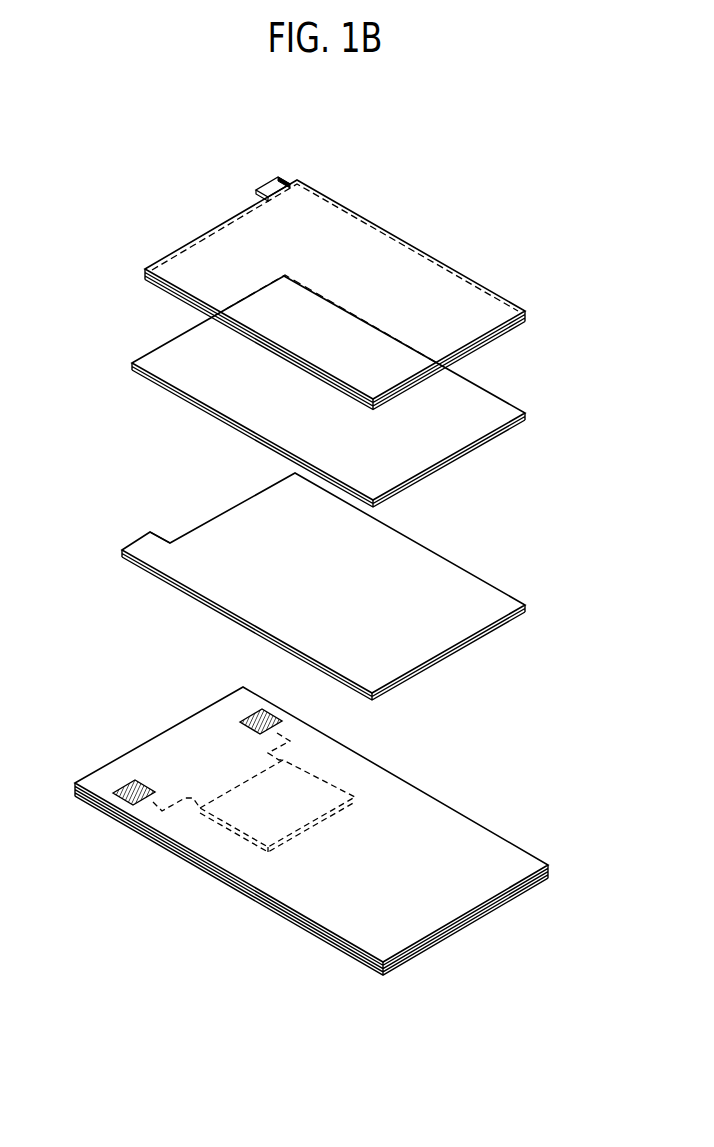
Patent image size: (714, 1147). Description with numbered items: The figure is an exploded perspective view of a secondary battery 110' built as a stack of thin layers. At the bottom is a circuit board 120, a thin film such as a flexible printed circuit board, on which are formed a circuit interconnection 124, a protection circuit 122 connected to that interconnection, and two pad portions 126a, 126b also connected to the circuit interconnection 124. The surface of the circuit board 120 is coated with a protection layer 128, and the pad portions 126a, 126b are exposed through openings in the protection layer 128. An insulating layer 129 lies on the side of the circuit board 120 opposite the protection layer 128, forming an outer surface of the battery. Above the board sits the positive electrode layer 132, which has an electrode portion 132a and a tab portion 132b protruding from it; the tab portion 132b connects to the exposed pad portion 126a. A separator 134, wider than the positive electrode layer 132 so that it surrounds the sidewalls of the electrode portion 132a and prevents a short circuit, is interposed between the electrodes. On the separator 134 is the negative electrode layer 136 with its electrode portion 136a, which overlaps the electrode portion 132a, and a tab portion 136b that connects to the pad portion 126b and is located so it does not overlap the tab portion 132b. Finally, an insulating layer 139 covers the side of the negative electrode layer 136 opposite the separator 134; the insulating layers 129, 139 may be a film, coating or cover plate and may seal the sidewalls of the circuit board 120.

The secondary battery 110' is at (313, 532).
The circuit board 120 is at (500, 837).
The protection circuit 122 is at (260, 788).
The circuit interconnection 124 is at (183, 797).
The pad portion 126a is at (128, 788).
The pad portion 126b is at (253, 713).
The protection layer 128 is at (442, 822).
The insulating layer 129 is at (227, 882).
The positive electrode layer 132 is at (492, 585).
The electrode portion 132a is at (407, 646).
The tab portion 132b is at (144, 538).
The separator 134 is at (493, 408).
The negative electrode layer 136 is at (425, 256).
The electrode portion 136a is at (457, 298).
The tab portion 136b is at (252, 186).
The insulating layer 139 is at (195, 240).